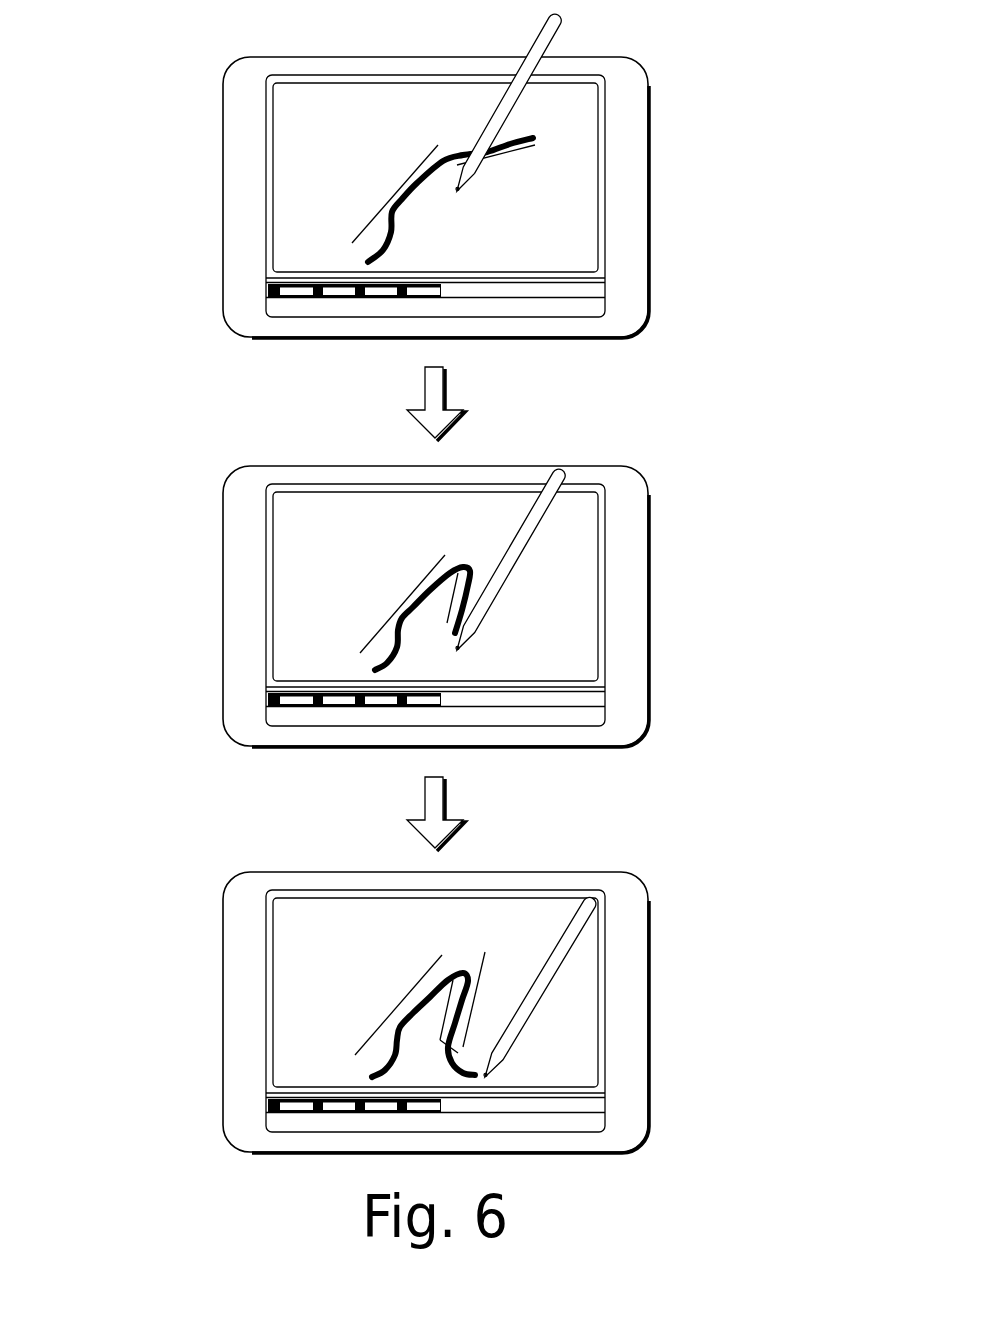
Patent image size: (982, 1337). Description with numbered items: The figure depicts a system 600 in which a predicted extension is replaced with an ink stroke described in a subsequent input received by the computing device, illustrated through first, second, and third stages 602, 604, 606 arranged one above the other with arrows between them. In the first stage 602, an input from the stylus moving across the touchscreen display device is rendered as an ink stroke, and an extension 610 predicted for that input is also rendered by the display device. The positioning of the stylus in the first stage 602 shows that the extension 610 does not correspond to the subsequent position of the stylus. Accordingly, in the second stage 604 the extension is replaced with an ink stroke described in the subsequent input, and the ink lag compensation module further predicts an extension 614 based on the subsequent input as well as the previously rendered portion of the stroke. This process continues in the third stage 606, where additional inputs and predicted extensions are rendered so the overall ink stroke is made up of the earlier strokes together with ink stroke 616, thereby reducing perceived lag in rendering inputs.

The system 600 is at (126, 39).
The first stage 602 is at (190, 163).
The second stage 604 is at (190, 572).
The third stage 606 is at (190, 978).
The extension 610 is at (496, 158).
The extension 614 is at (447, 623).
The ink stroke 616 is at (485, 952).